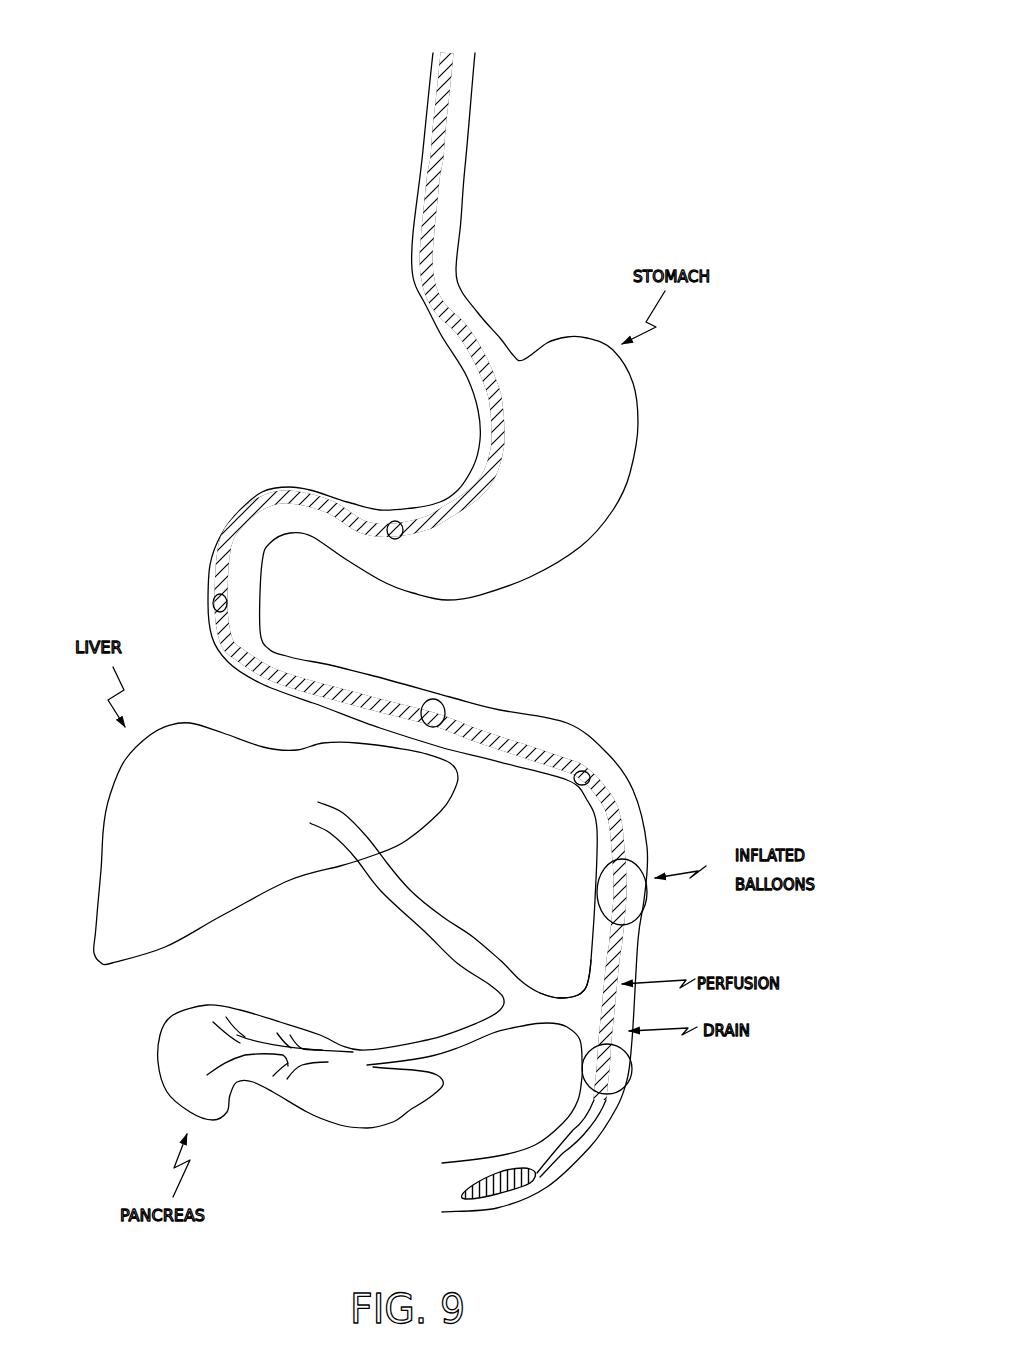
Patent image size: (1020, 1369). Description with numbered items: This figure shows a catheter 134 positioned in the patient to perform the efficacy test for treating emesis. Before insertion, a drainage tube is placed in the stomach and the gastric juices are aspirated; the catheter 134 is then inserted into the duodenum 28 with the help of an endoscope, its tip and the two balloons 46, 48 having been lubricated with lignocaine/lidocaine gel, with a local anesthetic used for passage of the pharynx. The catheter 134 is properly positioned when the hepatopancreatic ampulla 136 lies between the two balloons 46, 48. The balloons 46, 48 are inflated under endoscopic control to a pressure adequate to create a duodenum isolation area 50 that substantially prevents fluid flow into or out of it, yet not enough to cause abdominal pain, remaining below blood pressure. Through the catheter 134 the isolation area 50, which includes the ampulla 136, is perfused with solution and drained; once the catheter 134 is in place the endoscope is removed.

The catheter 134 is at (447, 60).
The duodenum 28 is at (624, 781).
The balloon 46 is at (648, 894).
The duodenum isolation area 50 is at (630, 937).
The balloon 48 is at (632, 1075).
The hepatopancreatic ampulla 136 is at (558, 997).